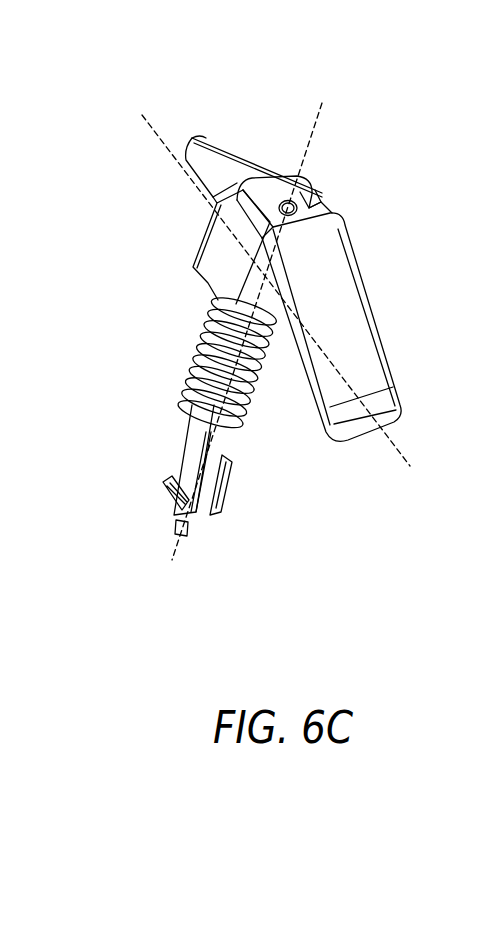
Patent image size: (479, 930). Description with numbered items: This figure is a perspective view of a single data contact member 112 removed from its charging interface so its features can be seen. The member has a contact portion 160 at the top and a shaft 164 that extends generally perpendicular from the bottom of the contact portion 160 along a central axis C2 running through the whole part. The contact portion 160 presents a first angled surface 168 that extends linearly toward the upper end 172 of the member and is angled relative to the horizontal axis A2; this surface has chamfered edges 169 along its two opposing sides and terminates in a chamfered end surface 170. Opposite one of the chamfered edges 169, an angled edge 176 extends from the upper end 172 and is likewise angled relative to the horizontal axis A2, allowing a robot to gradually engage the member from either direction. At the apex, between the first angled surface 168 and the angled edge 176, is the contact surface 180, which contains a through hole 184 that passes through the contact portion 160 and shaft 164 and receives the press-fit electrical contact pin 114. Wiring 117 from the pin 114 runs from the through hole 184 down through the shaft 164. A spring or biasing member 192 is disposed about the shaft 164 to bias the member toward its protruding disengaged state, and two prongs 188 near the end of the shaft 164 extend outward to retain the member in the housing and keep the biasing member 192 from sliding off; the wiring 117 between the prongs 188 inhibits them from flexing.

The data contact member 112 is at (339, 92).
The electrical contact pin 114 is at (287, 200).
The wiring 117 is at (190, 532).
The contact portion 160 is at (390, 228).
The shaft 164 is at (197, 433).
The first angled surface 168 is at (360, 353).
The chamfered edges 169 is at (365, 290).
The chamfered end surface 170 is at (353, 427).
The upper end 172 is at (347, 178).
The angled edge 176 is at (256, 167).
The contact surface 180 is at (255, 218).
The through hole 184 is at (310, 201).
The prongs 188 is at (162, 498).
The spring or biasing member 192 is at (189, 353).
The horizontal axis A2 is at (405, 452).
The central axis C2 is at (178, 548).